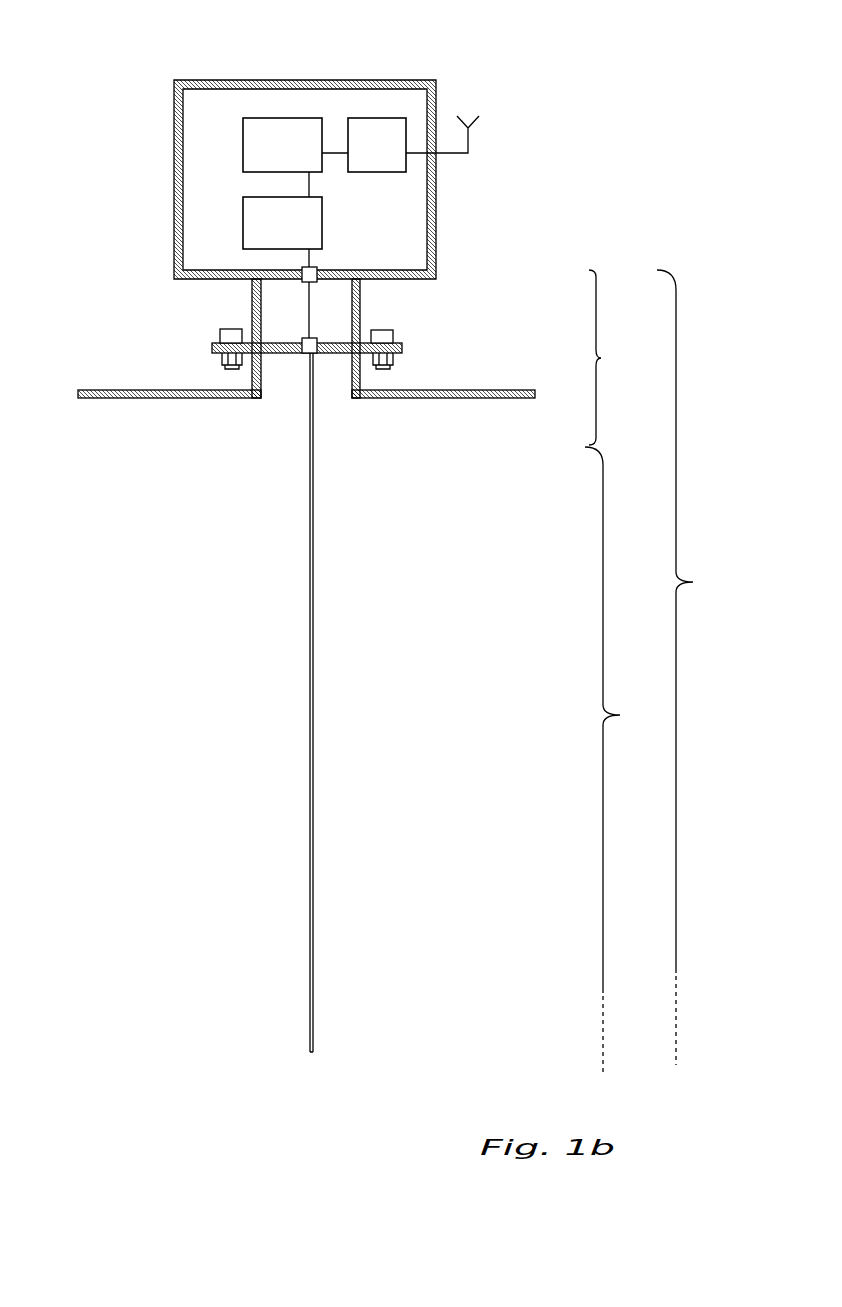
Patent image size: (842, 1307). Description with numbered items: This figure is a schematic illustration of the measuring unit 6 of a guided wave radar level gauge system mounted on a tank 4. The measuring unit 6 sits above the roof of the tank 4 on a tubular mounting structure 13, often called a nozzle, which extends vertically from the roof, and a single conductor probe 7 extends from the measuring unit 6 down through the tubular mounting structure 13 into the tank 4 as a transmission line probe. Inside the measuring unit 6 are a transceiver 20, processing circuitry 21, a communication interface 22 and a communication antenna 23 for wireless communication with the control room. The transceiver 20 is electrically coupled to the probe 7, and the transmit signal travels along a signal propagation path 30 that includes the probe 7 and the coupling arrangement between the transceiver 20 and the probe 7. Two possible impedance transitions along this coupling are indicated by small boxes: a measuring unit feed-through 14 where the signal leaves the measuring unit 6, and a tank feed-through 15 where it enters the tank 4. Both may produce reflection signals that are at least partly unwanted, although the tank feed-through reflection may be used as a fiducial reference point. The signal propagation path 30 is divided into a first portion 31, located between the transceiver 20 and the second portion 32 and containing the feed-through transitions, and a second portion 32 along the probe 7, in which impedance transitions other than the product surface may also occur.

The tank 4 is at (470, 388).
The measuring unit 6 is at (228, 80).
The single conductor probe 7 is at (313, 838).
The tubular mounting structure 13 is at (362, 380).
The measuring unit feed-through 14 is at (300, 281).
The tank feed-through 15 is at (317, 338).
The transceiver 20 is at (322, 213).
The processing circuitry 21 is at (243, 150).
The communication interface 22 is at (378, 118).
The communication antenna 23 is at (468, 141).
The signal propagation path 30 is at (692, 667).
The first portion of the signal propagation path 31 is at (612, 357).
The second portion of the signal propagation path 32 is at (620, 760).